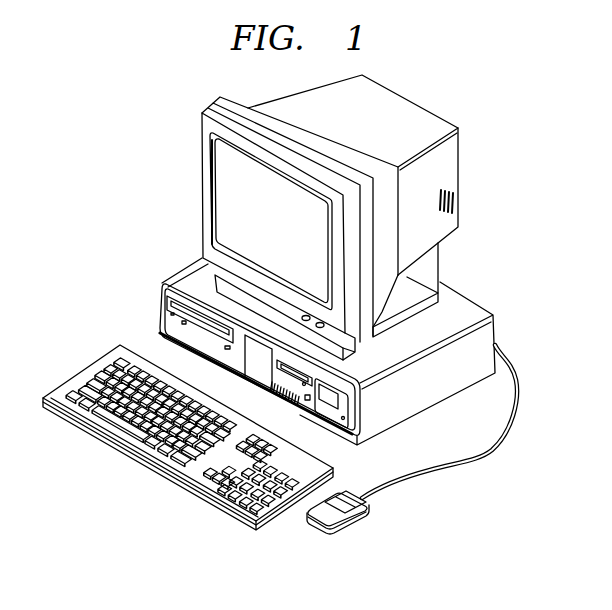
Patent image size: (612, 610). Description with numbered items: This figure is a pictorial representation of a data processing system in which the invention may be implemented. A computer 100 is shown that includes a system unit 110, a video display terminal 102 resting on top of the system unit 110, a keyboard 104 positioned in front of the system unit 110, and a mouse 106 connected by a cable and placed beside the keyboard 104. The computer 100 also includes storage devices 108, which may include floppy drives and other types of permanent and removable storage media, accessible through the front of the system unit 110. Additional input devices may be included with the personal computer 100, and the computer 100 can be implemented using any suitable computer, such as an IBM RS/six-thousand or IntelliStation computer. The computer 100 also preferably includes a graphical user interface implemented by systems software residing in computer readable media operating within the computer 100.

The computer 100 is at (129, 91).
The video display terminal 102 is at (410, 101).
The keyboard 104 is at (83, 373).
The mouse 106 is at (349, 523).
The storage devices 108 is at (317, 388).
The system unit 110 is at (180, 274).